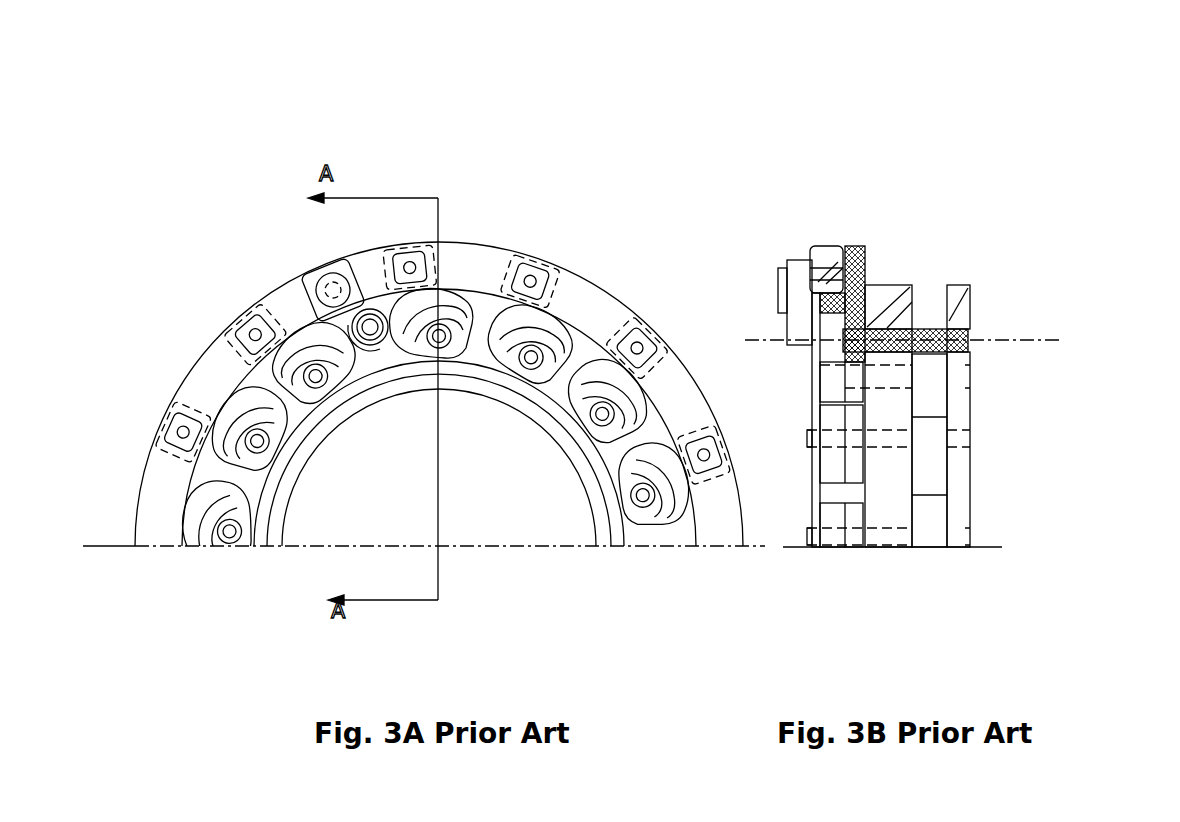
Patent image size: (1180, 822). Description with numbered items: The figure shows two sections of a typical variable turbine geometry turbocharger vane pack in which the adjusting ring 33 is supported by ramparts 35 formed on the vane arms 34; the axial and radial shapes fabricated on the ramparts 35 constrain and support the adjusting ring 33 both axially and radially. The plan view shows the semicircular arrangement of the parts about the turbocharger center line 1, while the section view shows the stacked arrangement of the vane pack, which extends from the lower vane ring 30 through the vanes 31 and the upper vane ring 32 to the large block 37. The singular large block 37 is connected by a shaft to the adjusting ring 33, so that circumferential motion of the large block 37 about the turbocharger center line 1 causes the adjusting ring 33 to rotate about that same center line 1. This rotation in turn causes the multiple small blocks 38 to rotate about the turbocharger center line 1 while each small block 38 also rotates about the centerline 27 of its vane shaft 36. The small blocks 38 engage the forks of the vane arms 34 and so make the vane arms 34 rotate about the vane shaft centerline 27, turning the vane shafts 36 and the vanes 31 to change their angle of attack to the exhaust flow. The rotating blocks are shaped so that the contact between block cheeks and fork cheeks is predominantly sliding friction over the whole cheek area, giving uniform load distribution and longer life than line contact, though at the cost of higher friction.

In FIG. 3A, the turbocharger center line 1 is at (300, 550).
In FIG. 3B, the vane shaft centerline 27 is at (1012, 345).
In FIG. 3B, the lower vane ring 30 is at (969, 290).
In FIG. 3B, the vane 31 is at (952, 310).
In FIG. 3B, the upper vane ring 32 is at (882, 312).
In FIG. 3A, the adjusting ring 33 is at (478, 263).
In FIG. 3B, the adjusting ring 33 is at (843, 280).
In FIG. 3B, the vane arm 34 is at (852, 247).
In FIG. 3A, the rampart 35 is at (302, 392).
In FIG. 3B, the rampart 35 is at (813, 305).
In FIG. 3A, the vane shaft 36 is at (243, 423).
In FIG. 3B, the vane shaft 36 is at (968, 335).
In FIG. 3A, the large block 37 is at (330, 263).
In FIG. 3B, the large block 37 is at (787, 325).
In FIG. 3A, the small block 38 is at (160, 432).
In FIG. 3B, the small block 38 is at (858, 513).